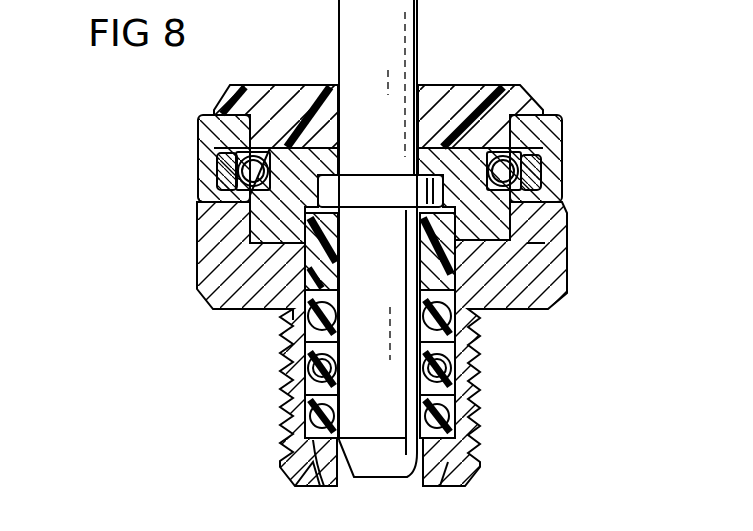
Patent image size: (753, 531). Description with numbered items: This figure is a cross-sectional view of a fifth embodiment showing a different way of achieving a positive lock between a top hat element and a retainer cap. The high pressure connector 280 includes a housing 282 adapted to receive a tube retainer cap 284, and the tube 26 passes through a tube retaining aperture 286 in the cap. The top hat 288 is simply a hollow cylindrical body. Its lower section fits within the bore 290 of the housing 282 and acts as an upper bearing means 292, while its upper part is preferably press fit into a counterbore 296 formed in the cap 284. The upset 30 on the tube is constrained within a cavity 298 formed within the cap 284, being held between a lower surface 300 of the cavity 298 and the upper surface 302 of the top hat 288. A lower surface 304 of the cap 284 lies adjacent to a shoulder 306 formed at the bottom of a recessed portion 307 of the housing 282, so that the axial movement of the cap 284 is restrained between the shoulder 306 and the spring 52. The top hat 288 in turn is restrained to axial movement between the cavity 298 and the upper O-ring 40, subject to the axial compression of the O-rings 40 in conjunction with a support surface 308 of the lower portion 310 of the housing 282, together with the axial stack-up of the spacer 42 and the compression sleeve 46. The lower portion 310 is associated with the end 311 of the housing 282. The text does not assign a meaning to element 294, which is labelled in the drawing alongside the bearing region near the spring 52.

The tube 26 is at (394, 47).
The upset 30 is at (394, 204).
The O-ring 40 is at (310, 345).
The spacer 42 is at (307, 365).
The compression sleeve 46 is at (307, 427).
The spring 52 is at (245, 170).
The high pressure connector 280 is at (120, 119).
The housing 282 is at (170, 244).
The tube retainer cap 284 is at (530, 226).
The tube retaining aperture 286 is at (340, 160).
The top hat 288 is at (505, 309).
The bore 290 is at (282, 310).
The upper bearing means 292 is at (566, 288).
The bearing seal 294 is at (232, 152).
The counterbore 296 is at (268, 210).
The cavity 298 is at (214, 118).
The lower surface 300 is at (427, 175).
The upper surface 302 is at (450, 205).
The lower surface 304 is at (305, 258).
The shoulder 306 is at (312, 285).
The recessed portion 307 is at (527, 245).
The support surface 308 is at (318, 486).
The lower portion 310 is at (302, 463).
The end 311 is at (440, 488).